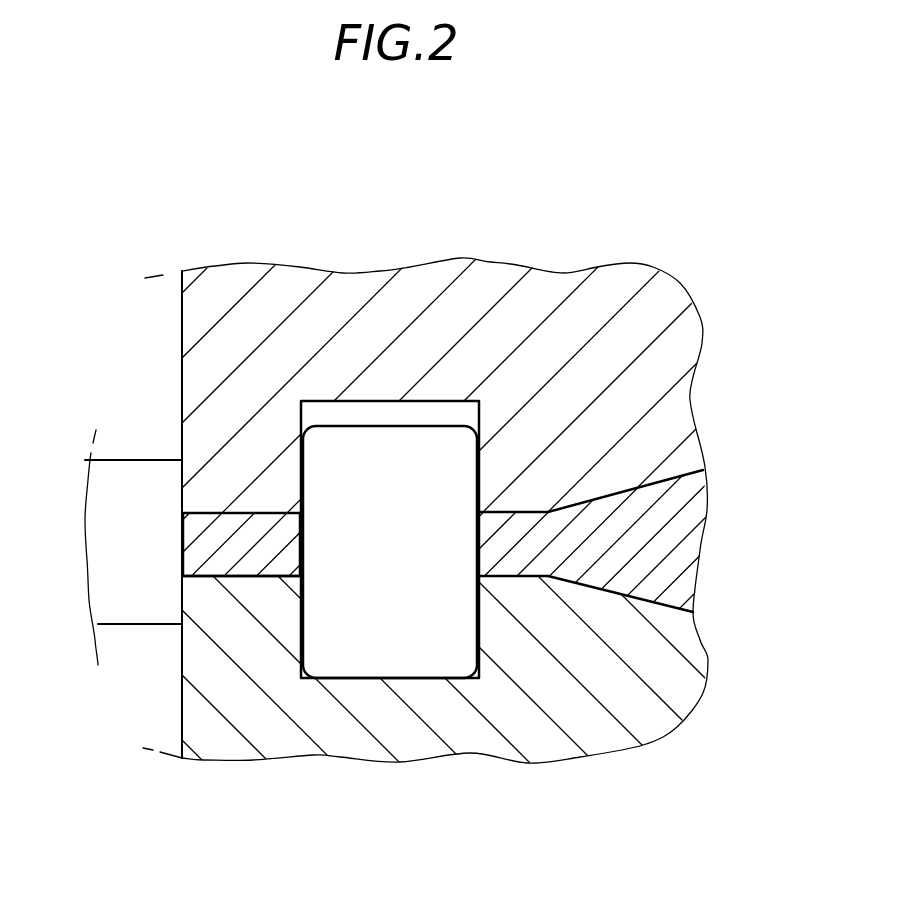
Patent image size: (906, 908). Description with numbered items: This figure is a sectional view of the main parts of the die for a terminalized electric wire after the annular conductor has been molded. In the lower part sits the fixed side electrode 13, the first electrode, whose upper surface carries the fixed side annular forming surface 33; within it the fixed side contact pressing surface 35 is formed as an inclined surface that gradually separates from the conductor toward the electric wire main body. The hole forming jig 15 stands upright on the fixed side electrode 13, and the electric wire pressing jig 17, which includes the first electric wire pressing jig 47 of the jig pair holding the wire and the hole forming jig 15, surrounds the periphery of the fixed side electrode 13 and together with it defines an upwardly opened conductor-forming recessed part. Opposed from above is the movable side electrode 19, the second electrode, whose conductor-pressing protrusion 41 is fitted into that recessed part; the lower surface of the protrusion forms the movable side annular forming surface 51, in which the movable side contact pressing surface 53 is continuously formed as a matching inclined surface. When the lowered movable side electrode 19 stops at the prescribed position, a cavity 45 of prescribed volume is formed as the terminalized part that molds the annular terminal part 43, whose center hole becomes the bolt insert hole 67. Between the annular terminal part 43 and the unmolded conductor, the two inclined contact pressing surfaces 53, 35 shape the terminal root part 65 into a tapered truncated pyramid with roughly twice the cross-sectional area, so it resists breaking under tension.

The movable side electrode 19 is at (172, 321).
The fixed side electrode 13 is at (170, 707).
The conductor-pressing protrusion 41 is at (181, 397).
The electric wire pressing jig 17 is at (134, 455).
The first electric wire pressing jig 47 is at (122, 544).
The cavity 45 is at (223, 518).
The annular terminal part 43 is at (273, 578).
The bolt insert hole 67 is at (475, 533).
The hole forming jig 15 is at (372, 450).
The movable side contact pressing surface 53 is at (645, 530).
The movable side annular forming surface 51 is at (499, 512).
The terminal root part 65 is at (665, 520).
The fixed side contact pressing surface 35 is at (599, 607).
The fixed side annular forming surface 33 is at (596, 582).